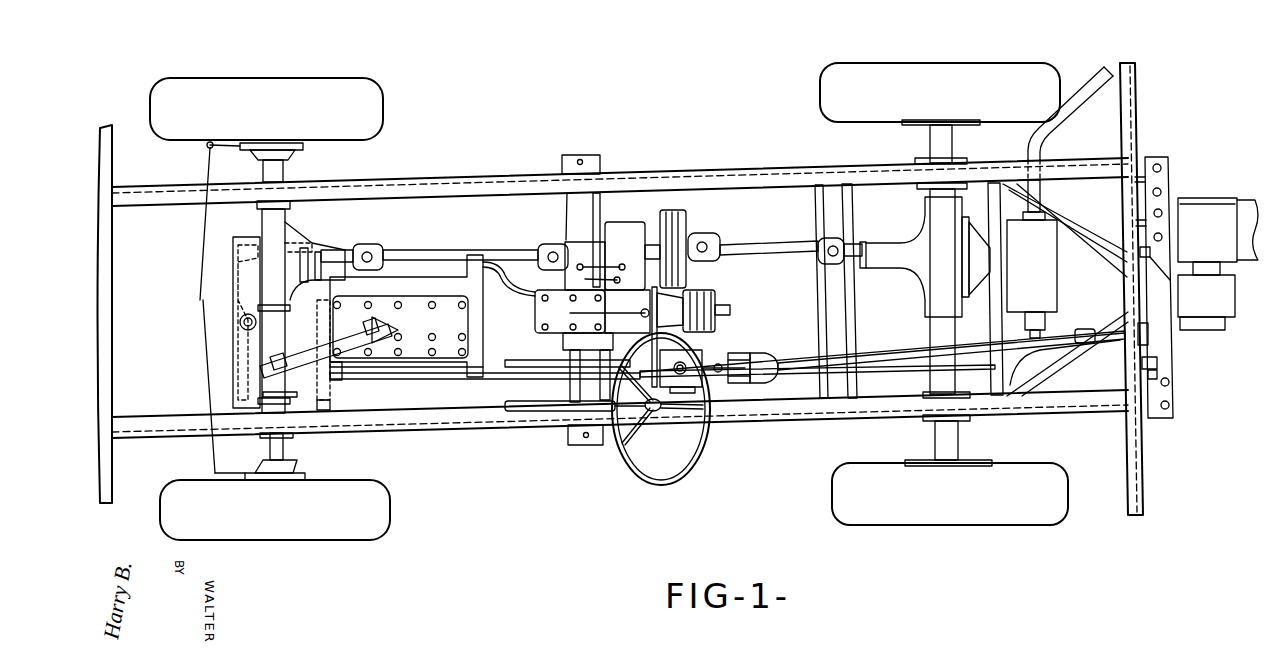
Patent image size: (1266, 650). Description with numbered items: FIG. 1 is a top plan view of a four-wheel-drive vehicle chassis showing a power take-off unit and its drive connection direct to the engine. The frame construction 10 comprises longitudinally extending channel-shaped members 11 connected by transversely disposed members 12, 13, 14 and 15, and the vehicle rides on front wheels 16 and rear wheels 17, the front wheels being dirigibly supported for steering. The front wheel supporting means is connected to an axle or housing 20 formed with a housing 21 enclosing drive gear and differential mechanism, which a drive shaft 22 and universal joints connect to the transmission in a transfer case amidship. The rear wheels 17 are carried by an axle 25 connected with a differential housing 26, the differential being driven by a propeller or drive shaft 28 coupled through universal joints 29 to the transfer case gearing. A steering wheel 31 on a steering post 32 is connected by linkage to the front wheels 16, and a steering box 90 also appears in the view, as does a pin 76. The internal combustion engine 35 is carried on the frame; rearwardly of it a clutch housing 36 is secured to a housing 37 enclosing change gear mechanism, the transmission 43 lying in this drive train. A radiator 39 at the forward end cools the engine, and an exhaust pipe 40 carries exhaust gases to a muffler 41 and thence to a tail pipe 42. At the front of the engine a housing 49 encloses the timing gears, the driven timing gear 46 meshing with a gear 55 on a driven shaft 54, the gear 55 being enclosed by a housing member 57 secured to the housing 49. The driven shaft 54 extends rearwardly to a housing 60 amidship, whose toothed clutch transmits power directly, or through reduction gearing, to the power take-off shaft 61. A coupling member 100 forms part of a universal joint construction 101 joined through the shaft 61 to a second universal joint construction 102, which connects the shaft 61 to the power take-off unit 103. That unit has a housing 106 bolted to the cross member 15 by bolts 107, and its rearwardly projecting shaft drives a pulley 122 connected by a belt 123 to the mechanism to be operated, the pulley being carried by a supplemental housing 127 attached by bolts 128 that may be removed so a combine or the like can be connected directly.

The frame construction 10 is at (741, 424).
The channel-shaped members 11 is at (514, 178).
The transversely disposed member 12 is at (110, 247).
The transversely disposed member 13 is at (817, 203).
The transversely disposed member 14 is at (990, 205).
The transversely disposed member 15 is at (1131, 127).
The front wheels 16 is at (205, 72).
The rear wheels 17 is at (1013, 48).
The axle or housing 20 is at (279, 165).
The housing 21 is at (262, 238).
The drive shaft 22 is at (460, 240).
The axle 25 is at (931, 142).
The differential housing 26 is at (913, 224).
The propeller or drive shaft 28 is at (750, 254).
The universal joints 29 is at (702, 227).
The steering wheel 31 is at (628, 465).
The steering post 32 is at (560, 412).
The internal combustion engine 35 is at (423, 275).
The clutch housing 36 is at (508, 277).
The housing 37 is at (538, 322).
The radiator 39 is at (240, 292).
The exhaust pipe 40 is at (547, 362).
The muffler 41 is at (1052, 270).
The tail pipe 42 is at (1056, 152).
The transmission 43 is at (620, 216).
The driven timing gear 46 is at (312, 342).
The housing 49 is at (323, 370).
The driven shaft 54 is at (430, 380).
The gear 55 is at (331, 405).
The housing member 57 is at (322, 388).
The housing 60 is at (703, 350).
The power take-off shaft 61 is at (947, 352).
The pin 76 is at (722, 364).
The steering box 90 is at (722, 383).
The coupling member 100 is at (770, 355).
The universal joint construction 101 is at (768, 379).
The universal joint construction 102 is at (1093, 332).
The power take-off unit 103 is at (1180, 337).
The housing 106 is at (1157, 354).
The bolts 107 is at (1151, 251).
The pulley 122 is at (1227, 186).
The belt 123 is at (1245, 207).
The supplemental housing 127 is at (1202, 320).
The bolts 128 is at (1179, 300).